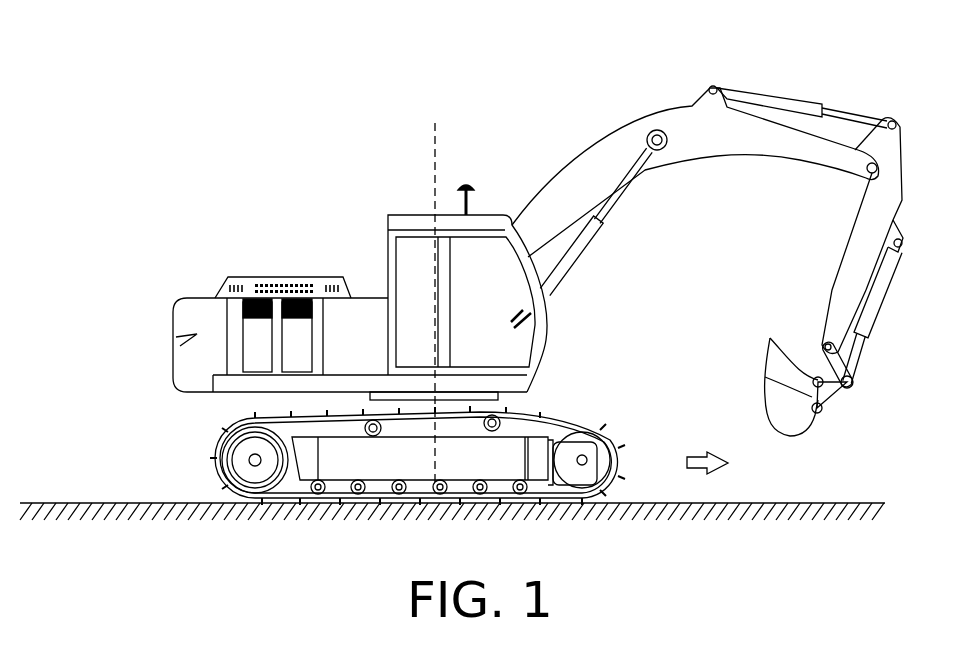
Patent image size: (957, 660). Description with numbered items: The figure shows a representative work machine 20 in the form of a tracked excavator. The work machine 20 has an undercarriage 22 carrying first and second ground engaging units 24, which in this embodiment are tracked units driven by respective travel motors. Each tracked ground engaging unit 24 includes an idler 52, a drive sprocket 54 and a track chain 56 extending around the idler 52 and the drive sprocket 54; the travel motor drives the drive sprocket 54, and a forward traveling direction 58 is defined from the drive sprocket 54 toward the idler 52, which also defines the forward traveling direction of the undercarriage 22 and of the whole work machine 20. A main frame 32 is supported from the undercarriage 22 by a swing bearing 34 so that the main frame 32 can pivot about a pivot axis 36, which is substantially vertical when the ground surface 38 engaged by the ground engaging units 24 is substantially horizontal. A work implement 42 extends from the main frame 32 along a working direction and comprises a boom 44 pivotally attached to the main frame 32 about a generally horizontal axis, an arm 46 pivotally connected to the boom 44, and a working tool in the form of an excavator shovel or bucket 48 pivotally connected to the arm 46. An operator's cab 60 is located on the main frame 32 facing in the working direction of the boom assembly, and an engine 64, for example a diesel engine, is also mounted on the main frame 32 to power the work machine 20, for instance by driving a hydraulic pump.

The work machine 20 is at (790, 51).
The undercarriage 22 is at (207, 468).
The ground engaging units 24 is at (417, 455).
The main frame 32 is at (245, 385).
The swing bearing 34 is at (498, 403).
The pivot axis 36 is at (433, 128).
The ground surface 38 is at (210, 500).
The work implement 42 is at (580, 126).
The boom 44 is at (662, 158).
The arm 46 is at (855, 245).
The excavator shovel (bucket) 48 is at (783, 427).
The idler 52 is at (617, 428).
The drive sprocket 54 is at (297, 497).
The track chain 56 is at (496, 500).
The forward traveling direction 58 is at (700, 452).
The operator's cab 60 is at (412, 225).
The engine 64 is at (222, 280).